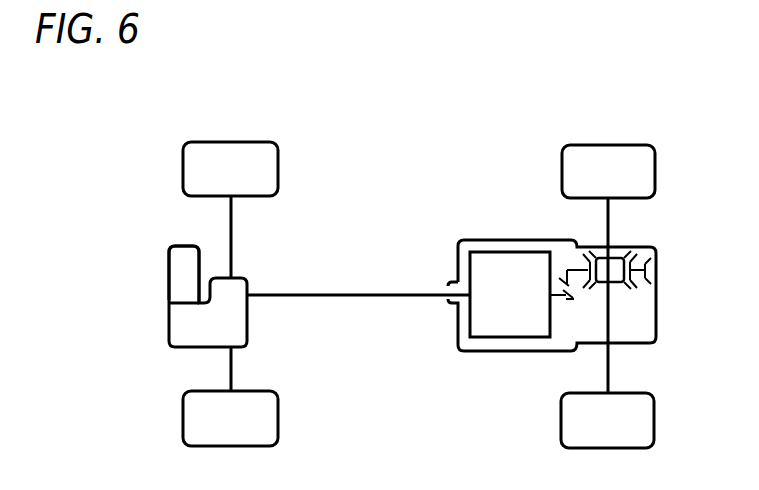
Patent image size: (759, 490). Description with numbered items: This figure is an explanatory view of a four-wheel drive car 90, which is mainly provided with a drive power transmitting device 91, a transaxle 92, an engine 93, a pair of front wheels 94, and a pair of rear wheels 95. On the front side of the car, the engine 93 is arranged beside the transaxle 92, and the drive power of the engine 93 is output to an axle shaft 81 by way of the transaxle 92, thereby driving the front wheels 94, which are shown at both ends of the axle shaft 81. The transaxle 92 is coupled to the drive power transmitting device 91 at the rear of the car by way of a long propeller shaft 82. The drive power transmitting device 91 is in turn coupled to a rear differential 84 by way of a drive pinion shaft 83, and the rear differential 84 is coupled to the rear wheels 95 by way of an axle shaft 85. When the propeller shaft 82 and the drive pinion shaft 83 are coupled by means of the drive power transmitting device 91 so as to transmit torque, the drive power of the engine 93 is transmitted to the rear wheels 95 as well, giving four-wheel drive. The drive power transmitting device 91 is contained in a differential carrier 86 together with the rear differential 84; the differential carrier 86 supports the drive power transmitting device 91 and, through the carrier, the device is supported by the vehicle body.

The four-wheel drive car 90 is at (484, 93).
The front wheels 94 is at (272, 168).
The axle shaft 81 is at (232, 238).
The transaxle 92 is at (175, 321).
The engine 93 is at (178, 281).
The propeller shaft 82 is at (361, 293).
The differential carrier 86 is at (474, 239).
The drive power transmitting device 91 is at (520, 252).
The drive pinion shaft 83 is at (565, 299).
The rear differential 84 is at (646, 292).
The axle shaft 85 is at (609, 223).
The rear wheels 95 is at (648, 170).